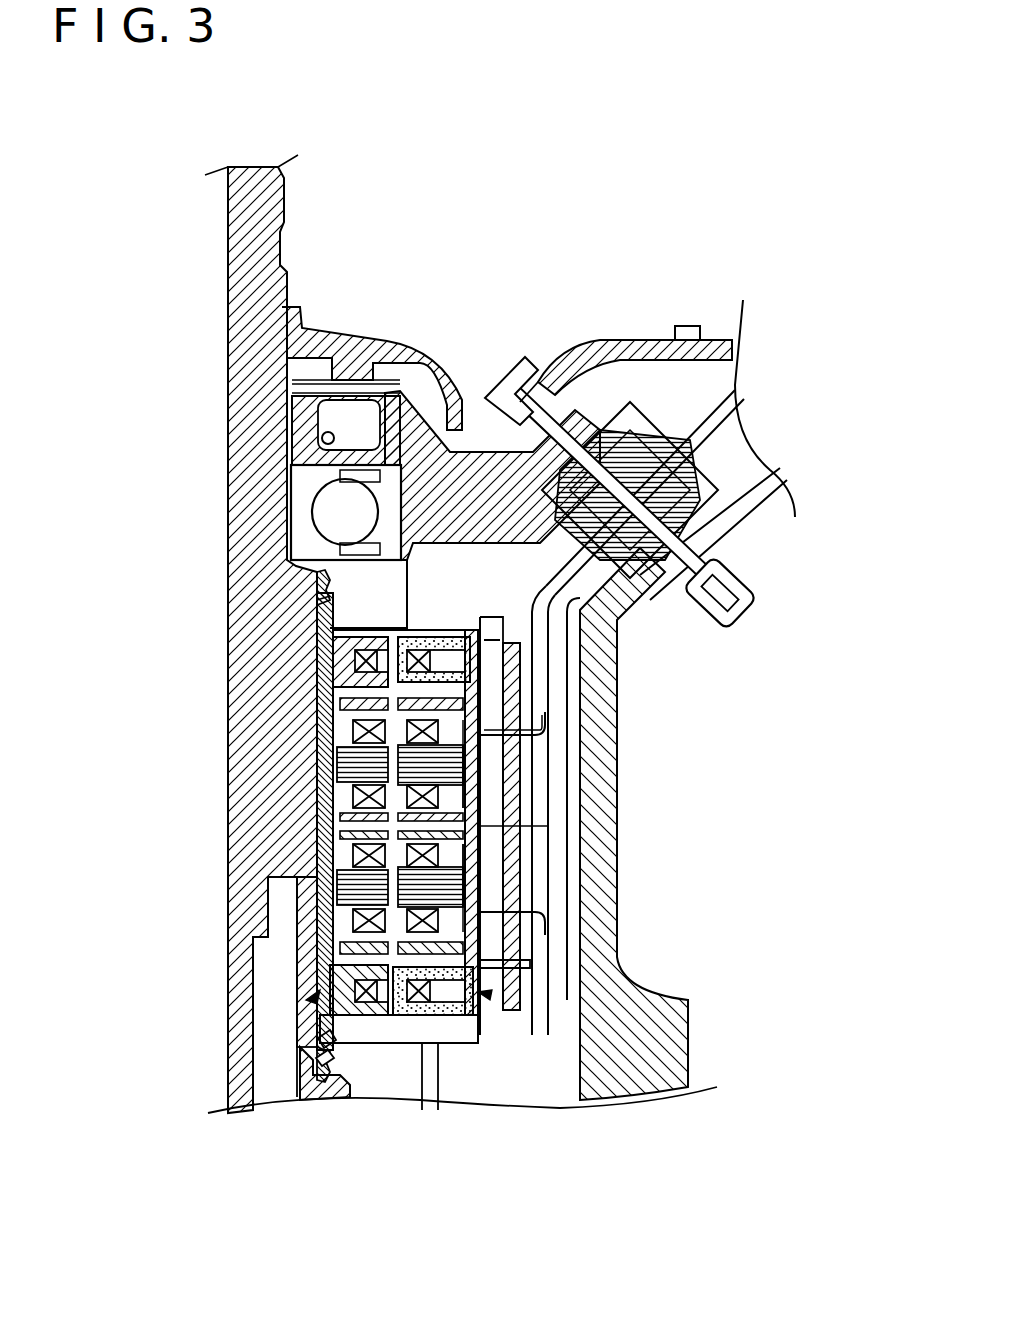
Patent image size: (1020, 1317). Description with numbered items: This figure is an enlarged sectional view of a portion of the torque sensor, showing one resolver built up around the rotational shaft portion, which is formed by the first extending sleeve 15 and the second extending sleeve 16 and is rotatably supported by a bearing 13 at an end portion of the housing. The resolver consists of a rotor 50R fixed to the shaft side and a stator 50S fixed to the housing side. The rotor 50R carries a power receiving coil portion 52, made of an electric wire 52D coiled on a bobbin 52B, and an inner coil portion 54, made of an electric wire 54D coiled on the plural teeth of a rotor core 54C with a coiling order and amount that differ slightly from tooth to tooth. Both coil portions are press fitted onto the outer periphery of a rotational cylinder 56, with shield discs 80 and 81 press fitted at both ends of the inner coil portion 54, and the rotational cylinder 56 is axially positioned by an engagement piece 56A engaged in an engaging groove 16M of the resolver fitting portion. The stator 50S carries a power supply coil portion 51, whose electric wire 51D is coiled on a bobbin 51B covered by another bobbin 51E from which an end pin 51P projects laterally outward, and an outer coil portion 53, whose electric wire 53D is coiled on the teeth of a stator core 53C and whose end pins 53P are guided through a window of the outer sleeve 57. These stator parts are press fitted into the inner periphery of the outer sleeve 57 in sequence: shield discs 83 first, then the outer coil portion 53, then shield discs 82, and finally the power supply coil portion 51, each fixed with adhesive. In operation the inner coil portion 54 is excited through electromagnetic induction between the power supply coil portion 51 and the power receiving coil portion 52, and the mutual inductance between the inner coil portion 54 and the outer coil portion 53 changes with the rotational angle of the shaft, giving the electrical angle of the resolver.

The bearing 13 is at (388, 477).
The first extending sleeve 15 is at (232, 298).
The second extending sleeve 16 is at (340, 1085).
The engaging groove 16M is at (300, 590).
The rotor 50R is at (82, 580).
The stator 50S is at (845, 635).
The power supply coil portion 51 is at (790, 637).
The bobbin 51B is at (536, 668).
The electric wire 51D is at (560, 705).
The bobbin 51E is at (490, 626).
The end pin 51P is at (522, 700).
The power receiving coil portion 52 is at (128, 618).
The bobbin 52B is at (345, 672).
The electric wire 52D is at (336, 648).
The outer coil portion 53 is at (790, 744).
The stator core 53C is at (465, 768).
The electric wire 53D is at (465, 805).
The end pin 53P is at (465, 742).
The inner coil portion 54 is at (128, 722).
The rotor core 54C is at (342, 766).
The electric wire 54D is at (342, 738).
The rotational cylinder 56 is at (322, 800).
The engagement piece 56A is at (318, 598).
The outer sleeve 57 is at (432, 1050).
The shield disc 80 is at (342, 704).
The shield disc 81 is at (342, 817).
The shield disc 82 is at (548, 738).
The shield disc 83 is at (482, 846).